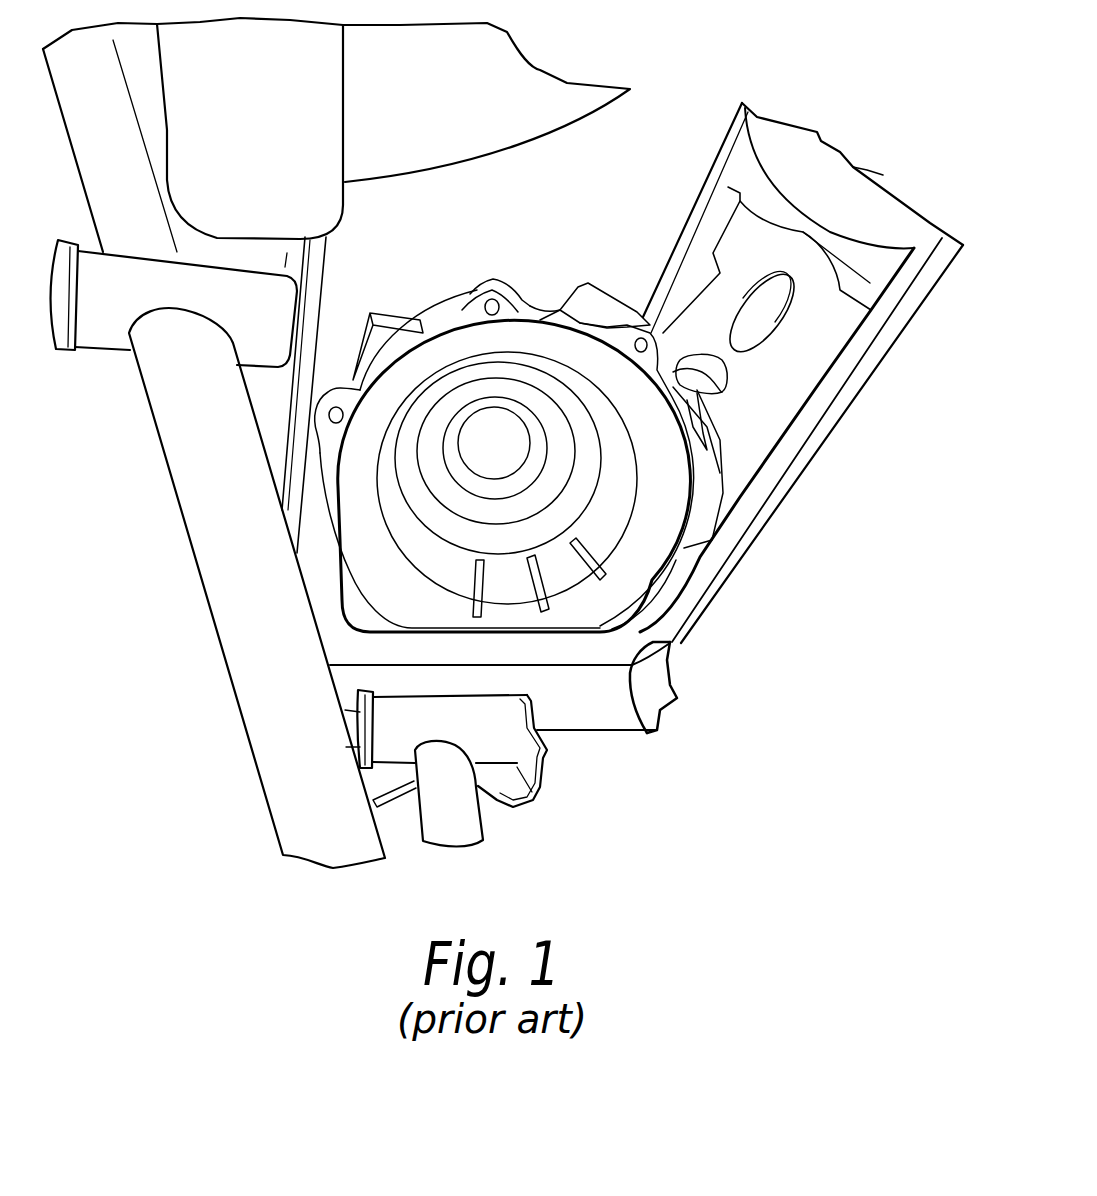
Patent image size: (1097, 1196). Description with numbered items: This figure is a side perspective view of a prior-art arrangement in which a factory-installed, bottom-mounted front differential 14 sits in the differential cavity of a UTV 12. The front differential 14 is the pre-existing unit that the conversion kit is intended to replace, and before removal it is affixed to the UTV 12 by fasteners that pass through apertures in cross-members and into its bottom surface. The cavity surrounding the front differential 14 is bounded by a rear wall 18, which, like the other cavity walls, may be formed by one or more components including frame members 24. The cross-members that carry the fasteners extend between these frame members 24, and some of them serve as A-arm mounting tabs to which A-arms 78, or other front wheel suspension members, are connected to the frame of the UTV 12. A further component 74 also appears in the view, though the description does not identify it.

The UTV 12 is at (200, 750).
The front differential 14 is at (340, 545).
The rear wall 18 is at (788, 391).
The frame members 24 is at (647, 735).
The frame member 74 is at (272, 126).
The A-arms 78 is at (237, 650).